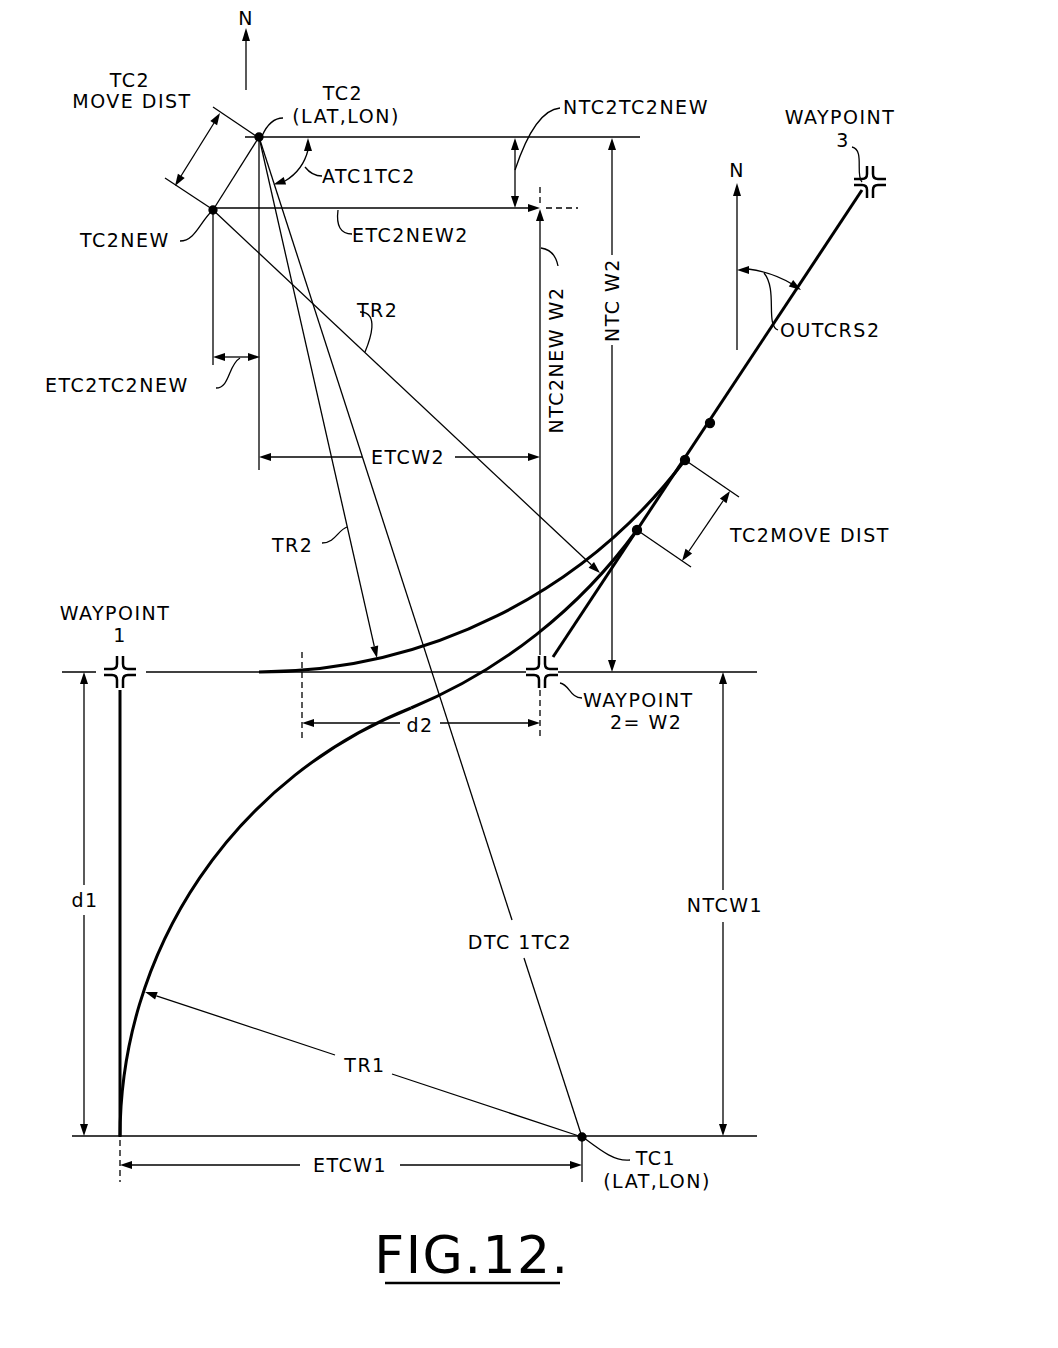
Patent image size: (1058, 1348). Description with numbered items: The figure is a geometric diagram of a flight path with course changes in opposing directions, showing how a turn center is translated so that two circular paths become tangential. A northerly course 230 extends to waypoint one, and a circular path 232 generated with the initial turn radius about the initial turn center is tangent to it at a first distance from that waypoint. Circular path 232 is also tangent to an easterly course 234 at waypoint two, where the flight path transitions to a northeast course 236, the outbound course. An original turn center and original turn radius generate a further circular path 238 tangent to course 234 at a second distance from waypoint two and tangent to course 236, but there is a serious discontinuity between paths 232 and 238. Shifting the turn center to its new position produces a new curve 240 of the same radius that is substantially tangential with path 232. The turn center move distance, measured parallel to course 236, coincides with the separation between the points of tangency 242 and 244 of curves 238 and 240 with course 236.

The northerly course 230 is at (122, 776).
The circular path 232 is at (220, 850).
The easterly course 234 is at (239, 670).
The northeast course 236 is at (708, 420).
The further circular path 238 is at (477, 623).
The new curve 240 is at (568, 602).
The point of tangency 242 is at (640, 536).
The point of tangency 244 is at (684, 458).